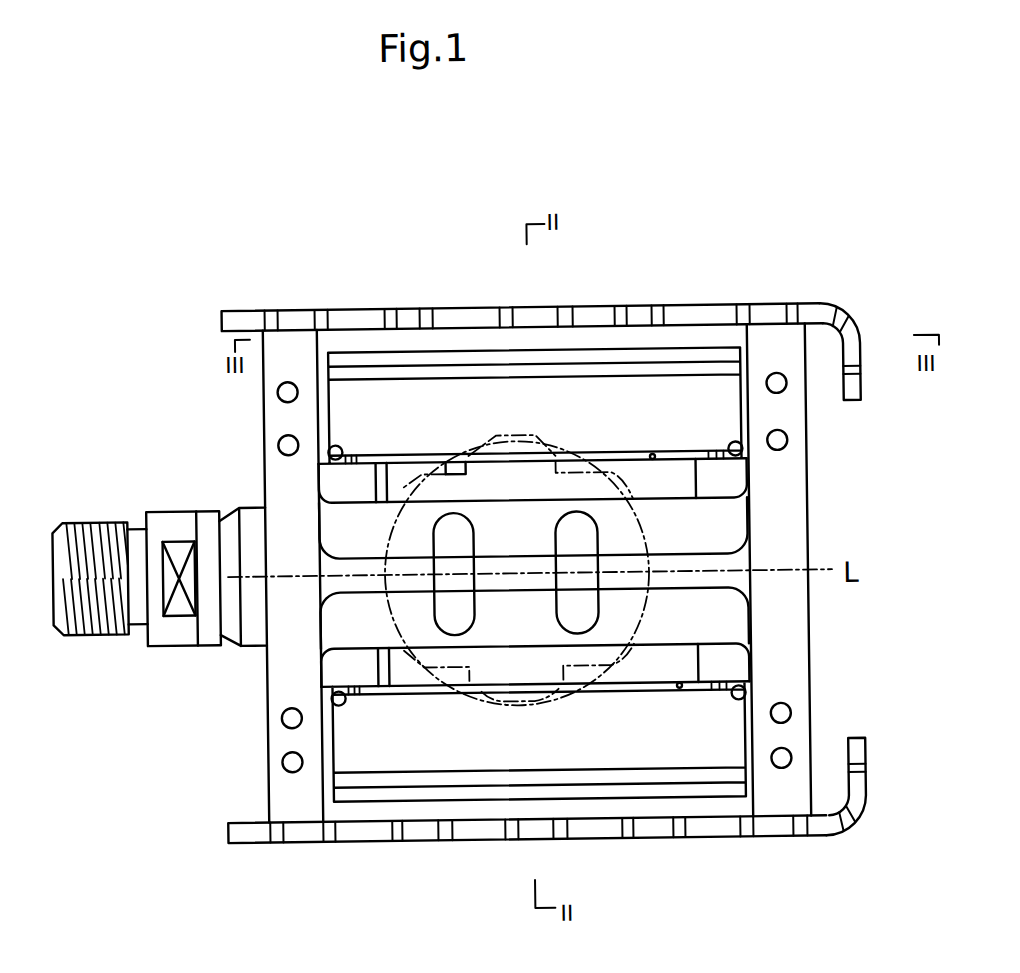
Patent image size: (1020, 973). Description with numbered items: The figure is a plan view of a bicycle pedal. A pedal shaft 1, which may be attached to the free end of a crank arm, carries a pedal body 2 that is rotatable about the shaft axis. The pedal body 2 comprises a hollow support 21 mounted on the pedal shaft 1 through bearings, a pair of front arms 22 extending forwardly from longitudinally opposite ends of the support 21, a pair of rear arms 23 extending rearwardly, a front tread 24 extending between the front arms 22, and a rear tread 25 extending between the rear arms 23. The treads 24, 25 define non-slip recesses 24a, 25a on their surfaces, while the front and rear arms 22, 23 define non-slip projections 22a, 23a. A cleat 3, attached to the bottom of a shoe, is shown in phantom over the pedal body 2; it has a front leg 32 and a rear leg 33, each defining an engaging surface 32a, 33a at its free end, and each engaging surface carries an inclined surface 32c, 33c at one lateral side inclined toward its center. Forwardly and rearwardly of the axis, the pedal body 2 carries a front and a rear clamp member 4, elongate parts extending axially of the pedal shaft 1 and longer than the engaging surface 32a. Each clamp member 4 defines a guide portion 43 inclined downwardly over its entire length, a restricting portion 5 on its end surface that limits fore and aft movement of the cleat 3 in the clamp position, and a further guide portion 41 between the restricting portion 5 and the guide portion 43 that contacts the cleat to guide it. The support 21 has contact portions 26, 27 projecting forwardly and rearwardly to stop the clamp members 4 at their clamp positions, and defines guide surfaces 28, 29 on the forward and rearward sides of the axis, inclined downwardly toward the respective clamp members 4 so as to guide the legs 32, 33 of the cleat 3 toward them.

The pedal shaft 1 is at (154, 507).
The pedal body 2 is at (810, 602).
The cleat 3 is at (450, 458).
The clamp member 4 is at (705, 378).
The restricting portion 5 is at (654, 455).
The hollow support 21 is at (390, 462).
The front arms 22 is at (275, 422).
The non-slip projections 22a is at (291, 389).
The rear arms 23 is at (277, 734).
The non-slip projections 23a is at (287, 761).
The front tread 24 is at (465, 306).
The non-slip recesses 24a is at (322, 307).
The rear tread 25 is at (414, 841).
The non-slip recesses 25a is at (395, 841).
The contact portion 26 is at (335, 451).
The contact portion 27 is at (338, 695).
The guide surface 28 is at (711, 525).
The guide surface 29 is at (681, 625).
The front leg 32 is at (548, 462).
The engaging surface 32a is at (541, 436).
The inclined surface 32c is at (490, 436).
The rear leg 33 is at (499, 679).
The engaging surface 33a is at (531, 703).
The inclined surface 33c is at (485, 696).
The guide portion 41 is at (630, 458).
The guide portion 43 is at (593, 386).